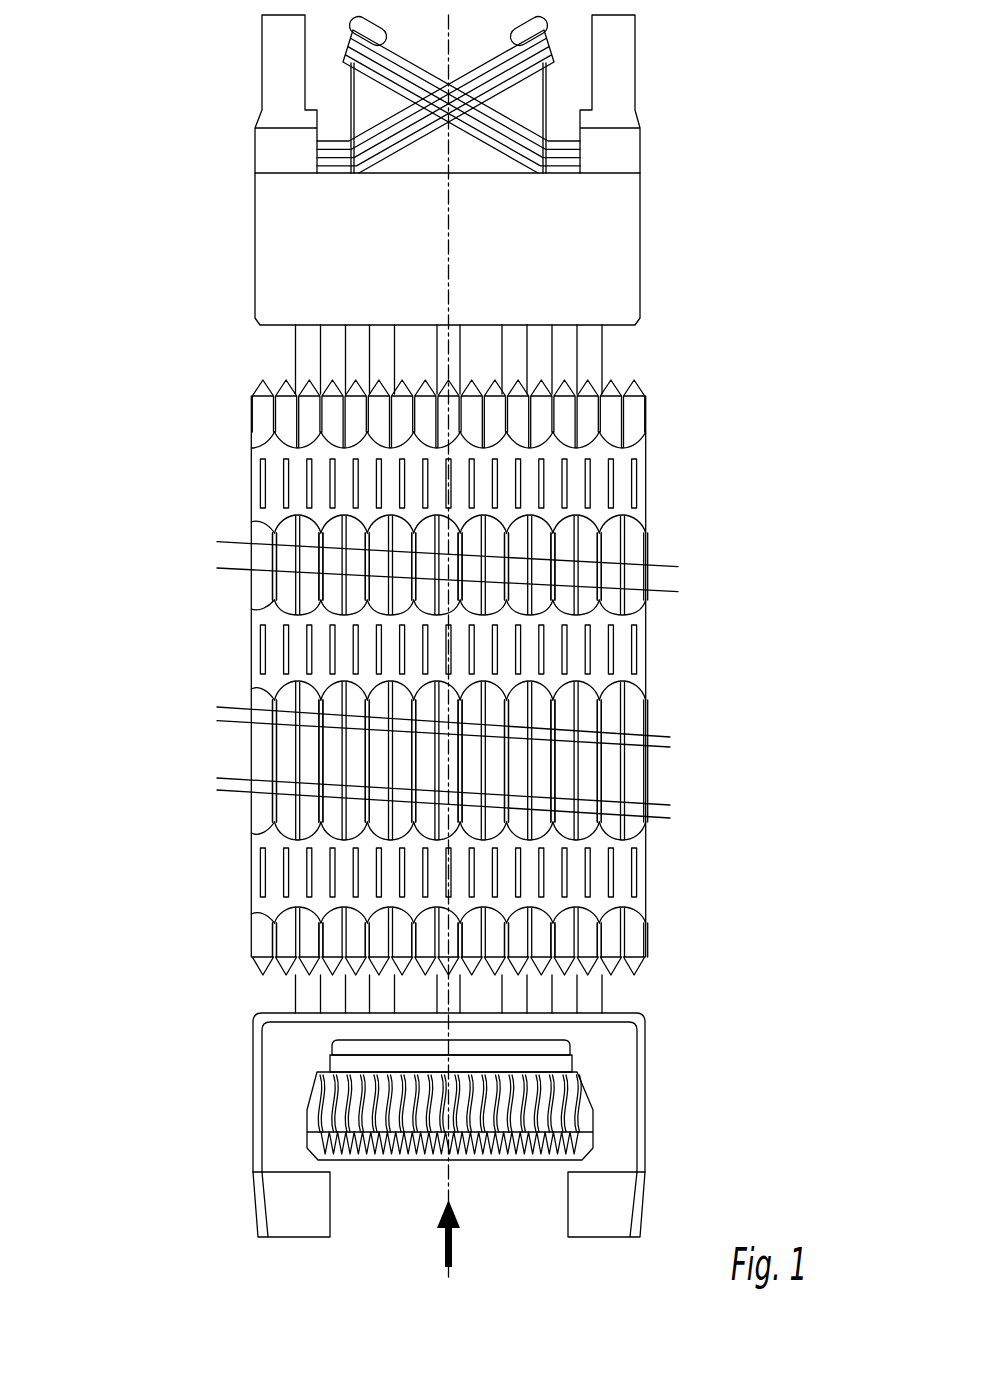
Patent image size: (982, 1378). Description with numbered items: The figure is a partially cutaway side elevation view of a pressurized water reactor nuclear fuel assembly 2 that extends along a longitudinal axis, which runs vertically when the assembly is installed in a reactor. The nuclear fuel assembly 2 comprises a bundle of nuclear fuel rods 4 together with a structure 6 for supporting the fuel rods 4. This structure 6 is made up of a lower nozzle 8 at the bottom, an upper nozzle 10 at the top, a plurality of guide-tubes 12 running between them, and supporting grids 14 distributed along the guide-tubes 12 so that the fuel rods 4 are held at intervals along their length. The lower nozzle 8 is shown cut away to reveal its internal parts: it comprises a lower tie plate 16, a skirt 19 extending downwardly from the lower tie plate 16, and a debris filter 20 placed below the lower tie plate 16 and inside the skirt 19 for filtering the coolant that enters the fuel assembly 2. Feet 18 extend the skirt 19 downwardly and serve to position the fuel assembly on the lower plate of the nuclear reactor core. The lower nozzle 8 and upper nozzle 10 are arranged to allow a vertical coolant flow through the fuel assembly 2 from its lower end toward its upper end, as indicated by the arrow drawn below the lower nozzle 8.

The nuclear fuel assembly 2 is at (122, 137).
The nuclear fuel rods 4 is at (288, 593).
The structure 6 is at (657, 203).
The lower nozzle 8 is at (210, 1136).
The upper nozzle 10 is at (252, 225).
The guide-tubes 12 is at (603, 353).
The supporting grids 14 is at (637, 450).
The lower tie plate 16 is at (541, 1040).
The feet 18 is at (285, 1208).
The skirt 19 is at (625, 1138).
The debris filter 20 is at (582, 1104).